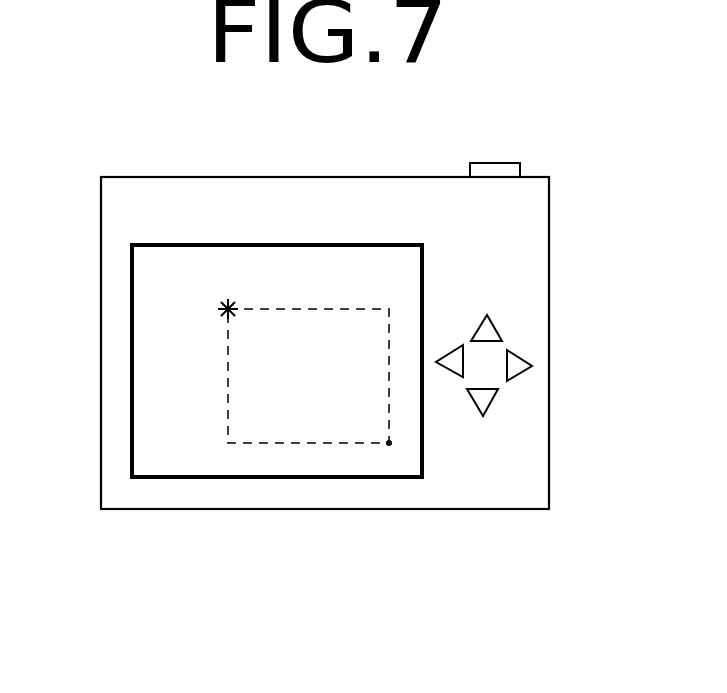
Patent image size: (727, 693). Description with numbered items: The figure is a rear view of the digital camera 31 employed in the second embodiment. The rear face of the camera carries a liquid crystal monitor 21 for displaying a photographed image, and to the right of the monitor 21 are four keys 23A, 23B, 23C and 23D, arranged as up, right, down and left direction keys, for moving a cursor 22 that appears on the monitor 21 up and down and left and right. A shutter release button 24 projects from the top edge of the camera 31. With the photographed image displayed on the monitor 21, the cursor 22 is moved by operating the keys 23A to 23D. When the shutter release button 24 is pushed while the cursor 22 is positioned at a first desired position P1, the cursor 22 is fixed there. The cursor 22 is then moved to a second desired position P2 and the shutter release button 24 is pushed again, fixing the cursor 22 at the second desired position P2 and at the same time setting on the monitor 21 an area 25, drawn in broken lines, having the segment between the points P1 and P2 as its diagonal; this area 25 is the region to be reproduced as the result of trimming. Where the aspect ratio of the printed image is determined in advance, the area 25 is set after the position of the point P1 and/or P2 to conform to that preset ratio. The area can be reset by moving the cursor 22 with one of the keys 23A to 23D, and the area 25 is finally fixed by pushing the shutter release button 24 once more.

The digital camera 31 is at (549, 237).
The shutter release button 24 is at (505, 163).
The liquid crystal monitor 21 is at (132, 442).
The cursor 22 is at (227, 308).
The area 25 is at (297, 443).
The first desired position P1 is at (228, 310).
The second desired position P2 is at (389, 443).
The key 23A is at (492, 328).
The key 23B is at (520, 353).
The key 23C is at (495, 397).
The key 23D is at (463, 377).